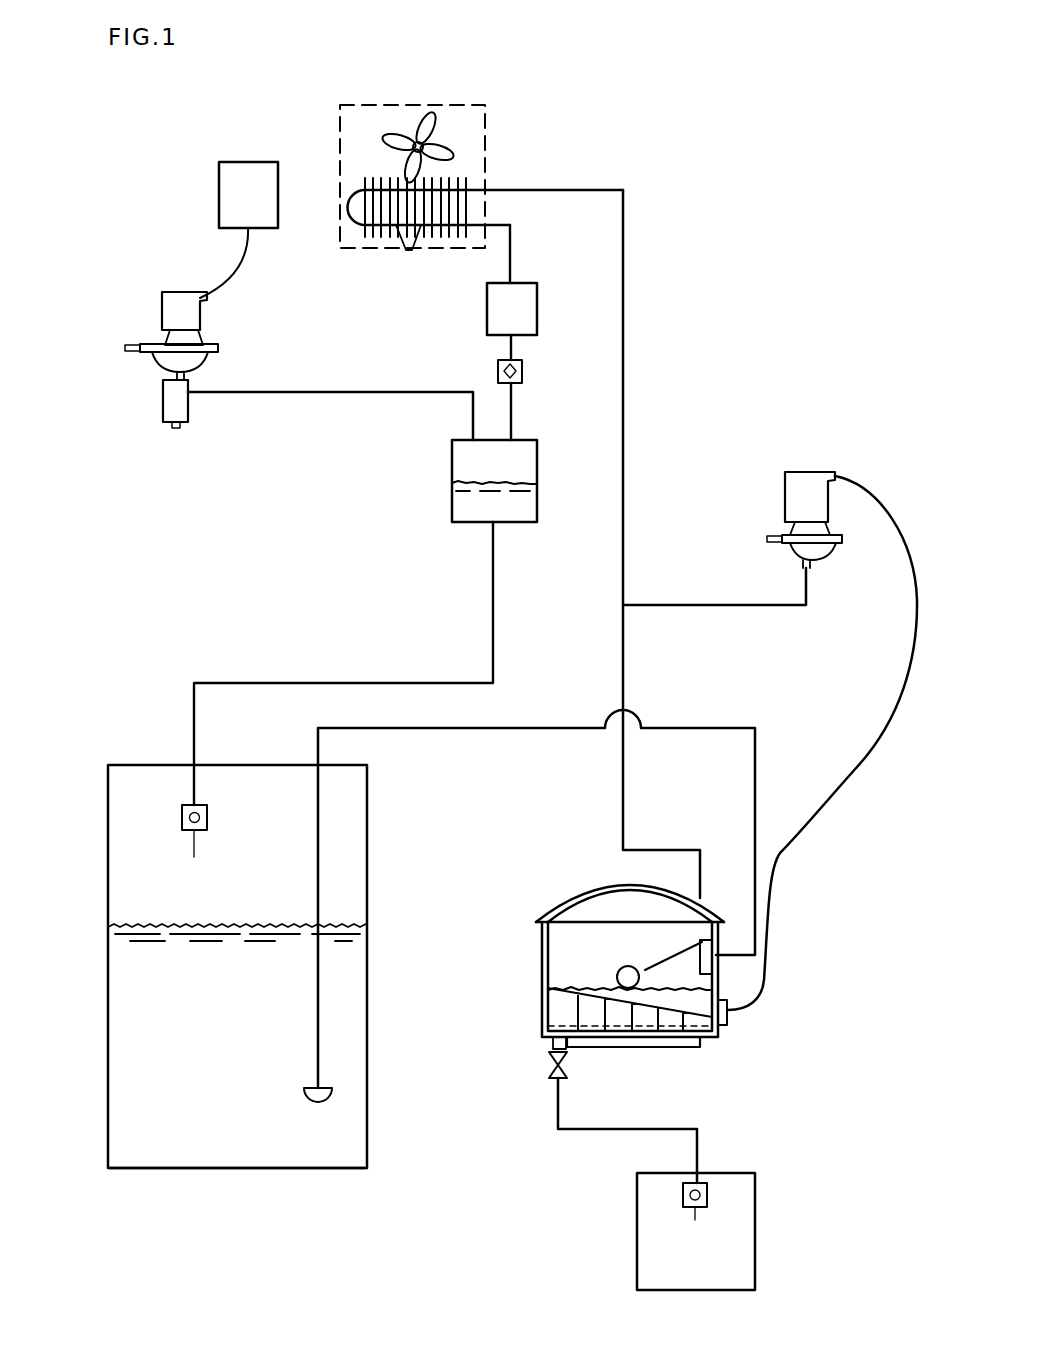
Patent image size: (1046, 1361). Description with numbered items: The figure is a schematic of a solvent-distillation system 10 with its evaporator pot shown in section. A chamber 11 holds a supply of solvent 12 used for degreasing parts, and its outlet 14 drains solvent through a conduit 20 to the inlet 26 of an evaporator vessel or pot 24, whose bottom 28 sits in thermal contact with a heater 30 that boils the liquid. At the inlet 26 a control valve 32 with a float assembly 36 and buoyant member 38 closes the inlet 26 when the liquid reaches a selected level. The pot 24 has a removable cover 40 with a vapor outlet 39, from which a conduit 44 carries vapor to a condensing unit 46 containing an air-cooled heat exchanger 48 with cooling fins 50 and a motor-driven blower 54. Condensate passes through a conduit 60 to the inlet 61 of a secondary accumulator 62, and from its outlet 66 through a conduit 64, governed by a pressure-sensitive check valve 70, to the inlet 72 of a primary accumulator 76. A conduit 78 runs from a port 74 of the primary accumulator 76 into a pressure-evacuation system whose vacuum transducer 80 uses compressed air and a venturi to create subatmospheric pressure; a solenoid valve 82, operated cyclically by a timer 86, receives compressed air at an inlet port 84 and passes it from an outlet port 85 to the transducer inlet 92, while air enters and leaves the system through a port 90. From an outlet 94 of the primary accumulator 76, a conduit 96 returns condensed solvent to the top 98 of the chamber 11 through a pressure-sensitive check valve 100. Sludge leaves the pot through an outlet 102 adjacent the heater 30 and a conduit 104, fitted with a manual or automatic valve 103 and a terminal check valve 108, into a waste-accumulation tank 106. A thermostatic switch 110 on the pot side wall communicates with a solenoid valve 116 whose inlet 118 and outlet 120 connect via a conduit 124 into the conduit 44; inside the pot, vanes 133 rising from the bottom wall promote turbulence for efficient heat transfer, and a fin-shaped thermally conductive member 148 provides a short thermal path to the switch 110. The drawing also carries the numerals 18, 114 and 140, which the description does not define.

The solvent-distillation system 10 is at (129, 725).
The chamber 11 is at (96, 1003).
The solvent 12 is at (125, 1106).
The outlet 14 is at (336, 1095).
The vat bottom 18 is at (240, 1168).
The conduit 20 is at (420, 728).
The evaporator vessel 24 is at (620, 850).
The inlet 26 is at (720, 953).
The bottom 28 is at (718, 1040).
The heater 30 is at (686, 1048).
The control valve 32 is at (699, 950).
The float assembly 36 is at (690, 978).
The buoyant member 38 is at (636, 967).
The vapor outlet 39 is at (702, 905).
The removable cover 40 is at (608, 893).
The conduit 44 is at (624, 530).
The condensing unit 46 is at (487, 130).
The heat exchanger 48 is at (348, 207).
The cooling fins 50 is at (408, 250).
The motor-driven blower 54 is at (440, 137).
The conduit 60 is at (513, 240).
The inlet 61 is at (512, 282).
The secondary accumulator 62 is at (538, 306).
The conduit 64 is at (512, 402).
The outlet 66 is at (513, 348).
The pressure-sensitive check valve 70 is at (498, 372).
The inlet 72 is at (515, 440).
The port 74 is at (472, 440).
The primary accumulator 76 is at (538, 498).
The conduit 78 is at (372, 392).
The vacuum transducer 80 is at (165, 402).
The solenoid valve 82 is at (172, 298).
The inlet port 84 is at (125, 348).
The outlet port 85 is at (195, 366).
The timer 86 is at (252, 165).
The port 90 is at (190, 396).
The inlet 92 is at (186, 380).
The outlet 94 is at (494, 530).
The conduit 96 is at (493, 609).
The top 98 is at (128, 793).
The pressure-sensitive check valve 100 is at (182, 818).
The outlet 102 is at (550, 1052).
The valve 103 is at (566, 1060).
The conduit 104 is at (698, 1152).
The waste-accumulation tank 106 is at (746, 1282).
The pressure-sensitive check valve 108 is at (708, 1195).
The thermostatic switch 110 is at (727, 1003).
The power wire 114 is at (892, 697).
The solenoid valve 116 is at (806, 478).
The inlet 118 is at (768, 539).
The outlet 120 is at (812, 562).
The conduit 124 is at (735, 605).
The vanes 133 is at (565, 1016).
The oil in vessel 140 is at (565, 938).
The thermally conductive member 148 is at (728, 1033).